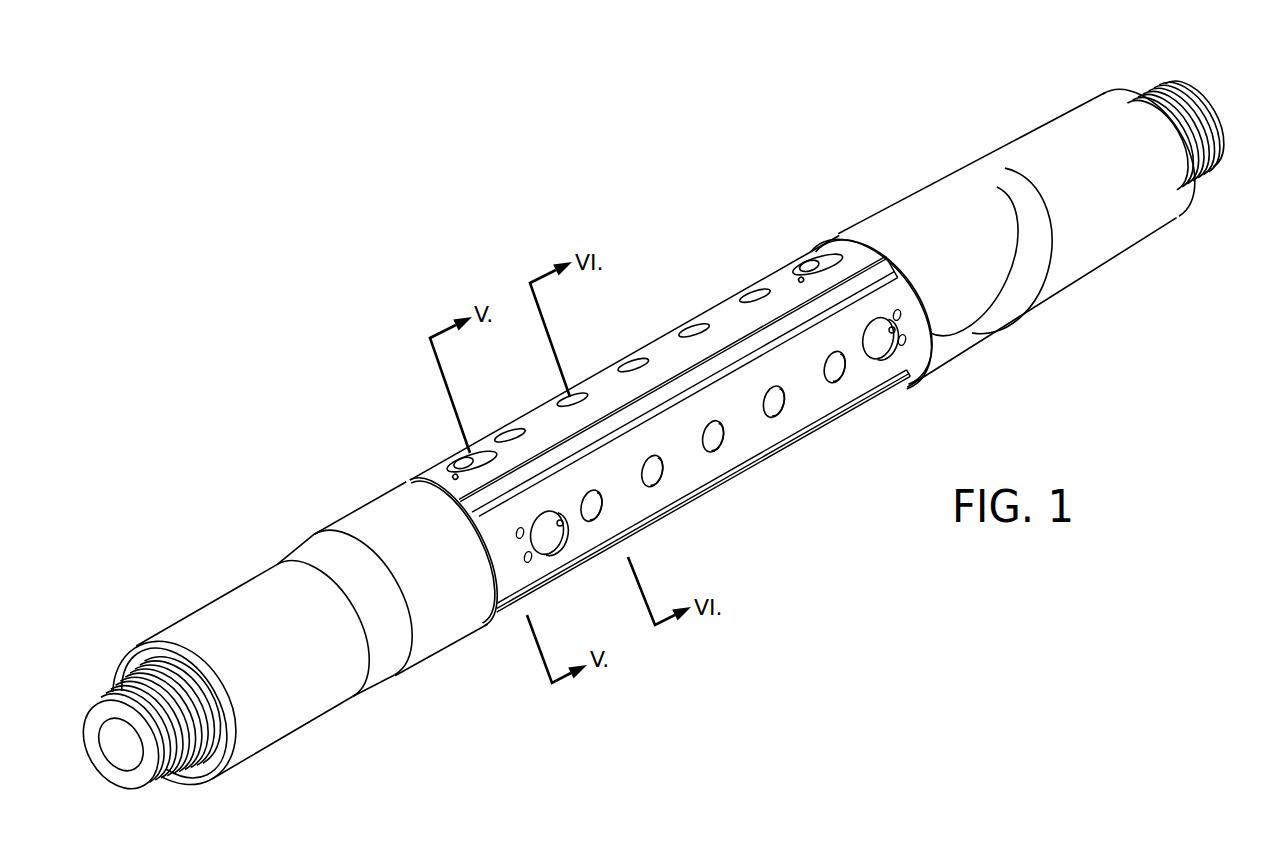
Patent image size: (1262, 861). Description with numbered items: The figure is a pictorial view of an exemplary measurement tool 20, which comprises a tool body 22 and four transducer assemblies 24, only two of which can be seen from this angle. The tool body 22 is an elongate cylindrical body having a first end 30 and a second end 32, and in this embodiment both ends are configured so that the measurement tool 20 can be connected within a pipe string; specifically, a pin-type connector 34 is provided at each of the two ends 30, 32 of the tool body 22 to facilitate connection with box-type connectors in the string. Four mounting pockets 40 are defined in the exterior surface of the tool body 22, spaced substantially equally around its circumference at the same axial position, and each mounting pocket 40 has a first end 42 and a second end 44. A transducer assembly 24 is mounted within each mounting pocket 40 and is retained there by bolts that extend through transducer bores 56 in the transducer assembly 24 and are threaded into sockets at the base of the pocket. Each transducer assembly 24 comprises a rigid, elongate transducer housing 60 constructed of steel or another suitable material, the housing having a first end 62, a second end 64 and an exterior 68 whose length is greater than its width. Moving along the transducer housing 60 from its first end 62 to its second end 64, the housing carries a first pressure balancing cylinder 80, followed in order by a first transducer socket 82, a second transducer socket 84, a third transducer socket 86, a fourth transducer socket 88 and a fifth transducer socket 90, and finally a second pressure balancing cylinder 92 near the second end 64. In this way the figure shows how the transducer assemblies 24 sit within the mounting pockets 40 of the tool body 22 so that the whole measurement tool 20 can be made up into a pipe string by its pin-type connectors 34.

The measurement tool 20 is at (661, 242).
The tool body 22 is at (1006, 150).
The transducer assembly 24 is at (665, 347).
The first end 30 is at (88, 703).
The second end 32 is at (1172, 86).
The pin-type connector 34 is at (197, 772).
The mounting pocket 40 is at (832, 230).
The first end 42 is at (405, 487).
The second end 44 is at (843, 236).
The transducer bore 56 is at (527, 533).
The transducer housing 60 is at (727, 308).
The first end 62 is at (415, 483).
The second end 64 is at (808, 243).
The exterior 68 is at (603, 370).
The first pressure balancing cylinder 80 is at (552, 548).
The first transducer socket 82 is at (596, 518).
The second transducer socket 84 is at (652, 480).
The third transducer socket 86 is at (714, 442).
The fourth transducer socket 88 is at (774, 405).
The fifth transducer socket 90 is at (840, 378).
The second pressure balancing cylinder 92 is at (882, 360).